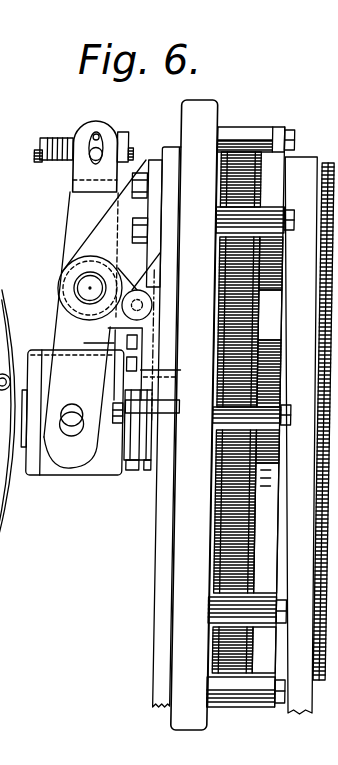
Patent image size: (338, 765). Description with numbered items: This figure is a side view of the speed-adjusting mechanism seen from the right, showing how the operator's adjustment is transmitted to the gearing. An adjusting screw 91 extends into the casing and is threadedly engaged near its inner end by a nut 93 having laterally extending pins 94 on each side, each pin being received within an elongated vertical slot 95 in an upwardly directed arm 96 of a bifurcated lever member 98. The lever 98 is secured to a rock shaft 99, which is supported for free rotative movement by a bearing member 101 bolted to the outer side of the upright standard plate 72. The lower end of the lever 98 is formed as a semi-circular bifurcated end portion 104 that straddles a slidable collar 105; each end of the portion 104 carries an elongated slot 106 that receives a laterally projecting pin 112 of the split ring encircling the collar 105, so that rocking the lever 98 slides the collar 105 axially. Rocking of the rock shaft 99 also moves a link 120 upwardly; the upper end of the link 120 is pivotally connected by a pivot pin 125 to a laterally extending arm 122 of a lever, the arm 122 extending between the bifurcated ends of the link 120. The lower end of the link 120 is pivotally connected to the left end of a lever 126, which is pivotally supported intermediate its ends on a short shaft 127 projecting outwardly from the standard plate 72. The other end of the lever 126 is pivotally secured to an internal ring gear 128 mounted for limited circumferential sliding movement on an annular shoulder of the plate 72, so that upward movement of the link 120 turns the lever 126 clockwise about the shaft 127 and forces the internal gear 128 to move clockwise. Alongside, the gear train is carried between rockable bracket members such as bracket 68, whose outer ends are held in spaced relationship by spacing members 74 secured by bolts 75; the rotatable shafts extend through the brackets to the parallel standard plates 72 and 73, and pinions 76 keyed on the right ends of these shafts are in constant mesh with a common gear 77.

The rockable bracket member 68 is at (259, 248).
The standard plate 72 is at (164, 612).
The standard plate 73 is at (301, 157).
The spacing member 74 is at (247, 135).
The bolt 75 is at (295, 130).
The pinion 76 is at (324, 165).
The common gear 77 is at (321, 350).
The adjusting screw 91 is at (50, 140).
The nut 93 is at (124, 135).
The pin 94 is at (84, 158).
The elongated vertical slot 95 is at (96, 133).
The upwardly directed arm 96 is at (88, 127).
The bifurcated lever member 98 is at (75, 208).
The rock shaft 99 is at (86, 291).
The bearing member 101 is at (97, 228).
The semi-circular bifurcated end portion 104 is at (64, 345).
The slidable collar 105 is at (52, 478).
The elongated slot 106 is at (72, 383).
The pin 112 is at (76, 430).
The link 120 is at (150, 462).
The laterally extending arm 122 is at (132, 290).
The pivot pin 125 is at (142, 305).
The lever 126 is at (136, 462).
The short shaft 127 is at (103, 427).
The internal ring gear 128 is at (207, 108).